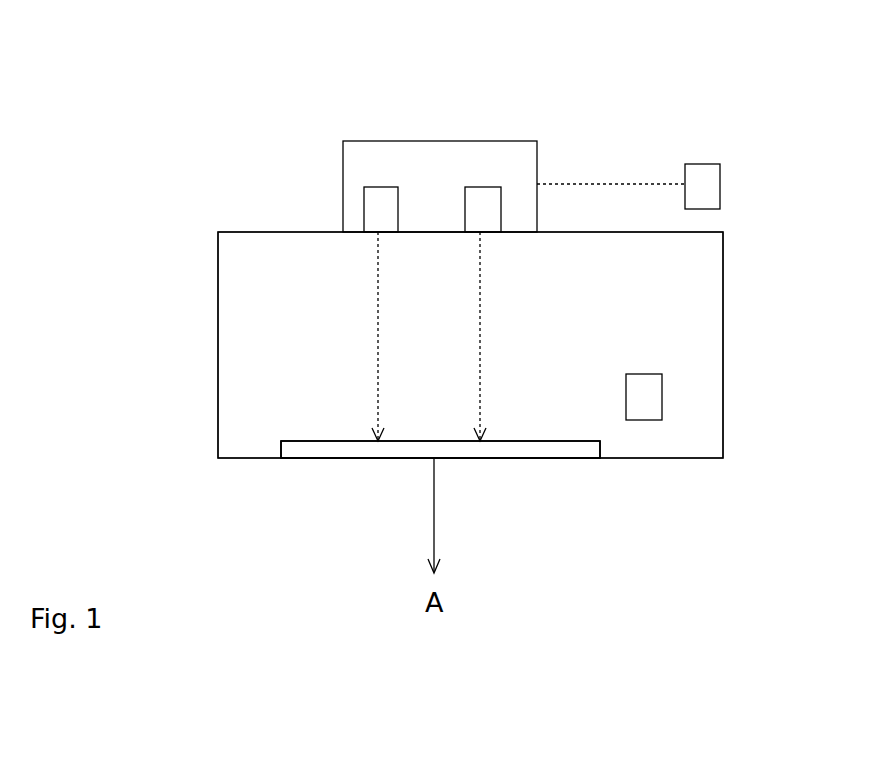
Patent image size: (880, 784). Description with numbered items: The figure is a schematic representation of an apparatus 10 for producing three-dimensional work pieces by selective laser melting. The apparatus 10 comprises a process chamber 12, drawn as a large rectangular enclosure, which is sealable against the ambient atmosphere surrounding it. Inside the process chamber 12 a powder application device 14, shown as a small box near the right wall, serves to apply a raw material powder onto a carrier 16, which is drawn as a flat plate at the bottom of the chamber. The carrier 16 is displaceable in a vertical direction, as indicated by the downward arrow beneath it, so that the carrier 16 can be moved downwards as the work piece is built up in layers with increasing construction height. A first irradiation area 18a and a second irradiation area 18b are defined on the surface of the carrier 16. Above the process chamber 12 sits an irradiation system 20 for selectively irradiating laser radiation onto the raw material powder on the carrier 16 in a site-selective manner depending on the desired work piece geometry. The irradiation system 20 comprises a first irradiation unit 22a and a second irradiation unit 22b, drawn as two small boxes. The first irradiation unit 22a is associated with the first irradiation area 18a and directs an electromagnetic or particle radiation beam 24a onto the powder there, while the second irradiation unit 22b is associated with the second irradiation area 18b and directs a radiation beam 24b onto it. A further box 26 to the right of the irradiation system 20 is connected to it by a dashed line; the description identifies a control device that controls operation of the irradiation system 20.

The apparatus 10 is at (600, 130).
The process chamber 12 is at (690, 260).
The powder application device 14 is at (640, 397).
The carrier 16 is at (508, 440).
The first irradiation area 18a is at (322, 441).
The second irradiation area 18b is at (532, 441).
The irradiation system 20 is at (517, 162).
The first irradiation unit 22a is at (380, 197).
The second irradiation unit 22b is at (481, 205).
The electromagnetic or particle radiation beam 24a is at (378, 355).
The electromagnetic or particle radiation beam 24b is at (480, 357).
The controller 26 is at (702, 180).